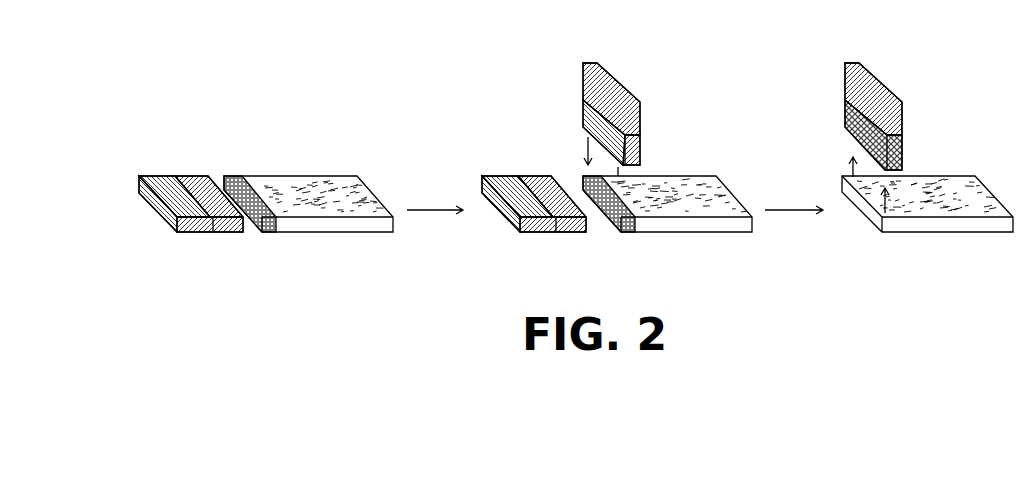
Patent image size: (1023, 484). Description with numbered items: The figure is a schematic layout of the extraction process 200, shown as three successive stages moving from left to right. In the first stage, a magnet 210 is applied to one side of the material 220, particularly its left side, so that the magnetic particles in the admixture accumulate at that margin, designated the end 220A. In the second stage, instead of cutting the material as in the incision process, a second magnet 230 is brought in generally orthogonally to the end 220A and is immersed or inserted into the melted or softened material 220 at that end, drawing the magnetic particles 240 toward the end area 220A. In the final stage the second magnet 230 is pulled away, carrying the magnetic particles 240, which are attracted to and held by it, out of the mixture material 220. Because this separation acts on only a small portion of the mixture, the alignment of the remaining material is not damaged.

The extraction process 200 is at (321, 305).
The magnet 210 is at (195, 235).
The material 220 is at (335, 175).
The end of the material 220A is at (232, 175).
The second magnet 230 is at (613, 75).
The magnetic particles 240 is at (628, 235).